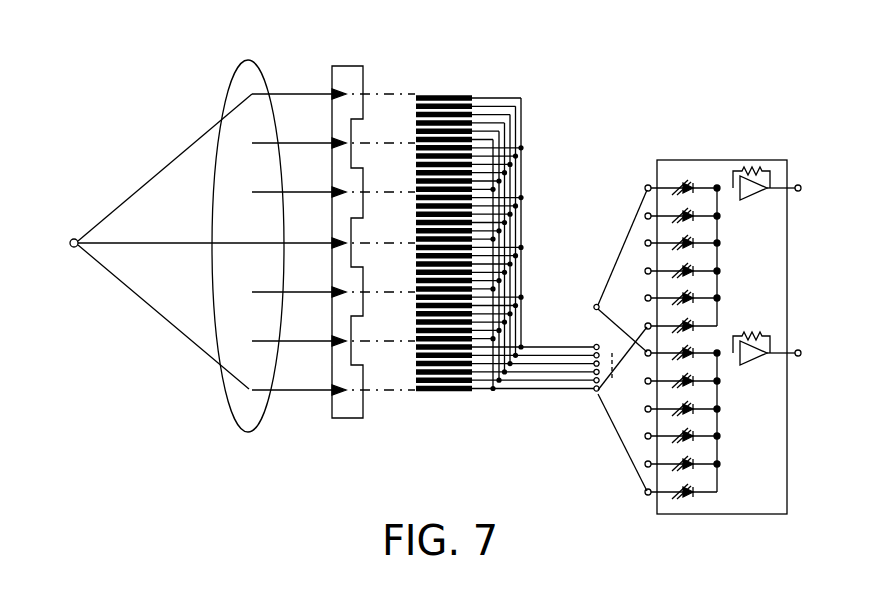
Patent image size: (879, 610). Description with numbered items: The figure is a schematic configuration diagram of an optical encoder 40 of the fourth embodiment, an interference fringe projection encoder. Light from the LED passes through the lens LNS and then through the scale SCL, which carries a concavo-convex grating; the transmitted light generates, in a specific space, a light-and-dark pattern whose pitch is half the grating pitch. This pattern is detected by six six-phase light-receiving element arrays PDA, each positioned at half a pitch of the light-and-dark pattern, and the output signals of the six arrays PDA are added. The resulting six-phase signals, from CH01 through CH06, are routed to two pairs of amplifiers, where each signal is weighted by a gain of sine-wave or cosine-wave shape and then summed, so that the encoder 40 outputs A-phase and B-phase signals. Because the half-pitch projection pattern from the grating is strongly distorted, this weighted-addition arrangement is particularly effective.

The optical encoder 40 is at (715, 105).
The element LED is at (138, 241).
The lens LNS is at (248, 261).
The scale SCL is at (333, 258).
The light-receiving element array PDA is at (498, 275).
The six-phase signal CH1 CH01 is at (612, 278).
The six-phase signal CH6 CH06 is at (620, 409).